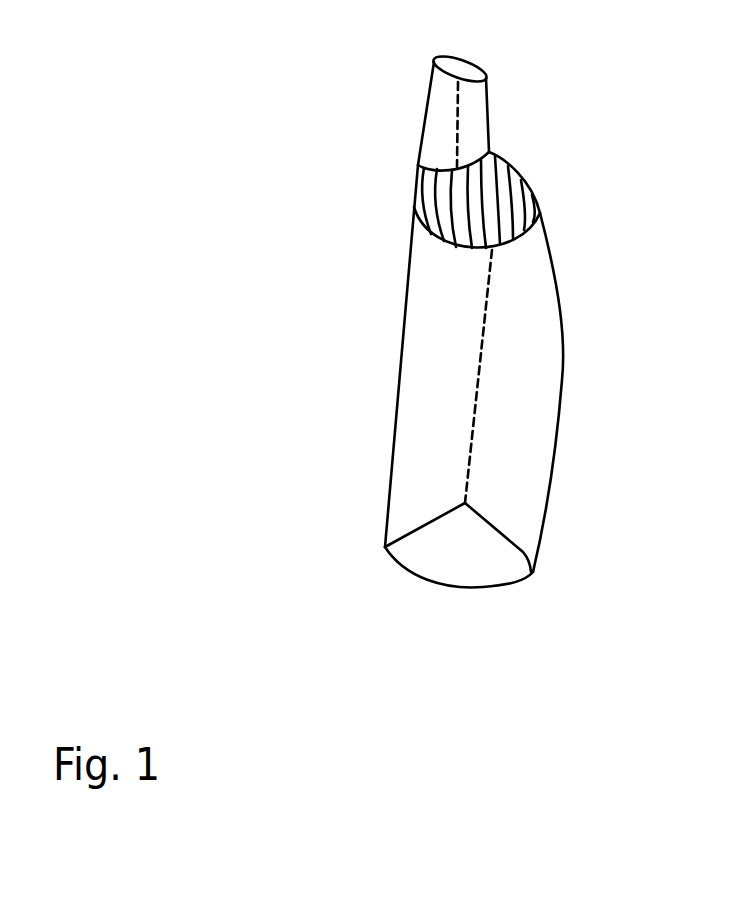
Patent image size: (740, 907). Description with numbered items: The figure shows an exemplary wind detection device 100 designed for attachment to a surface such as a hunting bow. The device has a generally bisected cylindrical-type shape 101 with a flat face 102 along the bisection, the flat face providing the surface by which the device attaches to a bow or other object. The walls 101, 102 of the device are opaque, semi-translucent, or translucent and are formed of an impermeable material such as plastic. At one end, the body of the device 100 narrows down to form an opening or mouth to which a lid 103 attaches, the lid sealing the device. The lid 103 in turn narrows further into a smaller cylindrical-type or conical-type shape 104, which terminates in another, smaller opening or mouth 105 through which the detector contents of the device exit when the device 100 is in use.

The wind detection device 100 is at (377, 713).
The bisected cylindrical-type shape 101 is at (562, 384).
The flat face 102 is at (395, 413).
The lid 103 is at (527, 177).
The cylindrical-type or conical-type shape 104 is at (487, 110).
The smaller opening (mouth) 105 is at (477, 57).